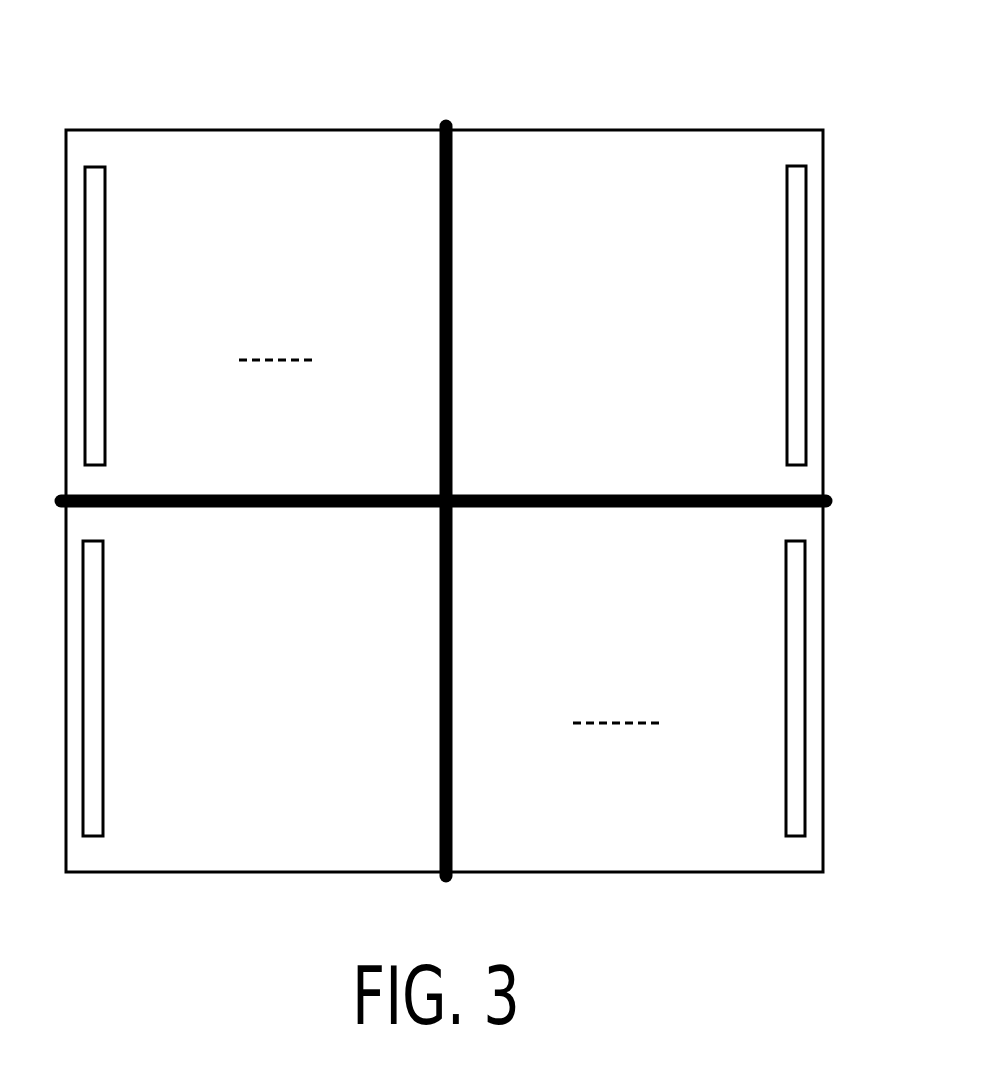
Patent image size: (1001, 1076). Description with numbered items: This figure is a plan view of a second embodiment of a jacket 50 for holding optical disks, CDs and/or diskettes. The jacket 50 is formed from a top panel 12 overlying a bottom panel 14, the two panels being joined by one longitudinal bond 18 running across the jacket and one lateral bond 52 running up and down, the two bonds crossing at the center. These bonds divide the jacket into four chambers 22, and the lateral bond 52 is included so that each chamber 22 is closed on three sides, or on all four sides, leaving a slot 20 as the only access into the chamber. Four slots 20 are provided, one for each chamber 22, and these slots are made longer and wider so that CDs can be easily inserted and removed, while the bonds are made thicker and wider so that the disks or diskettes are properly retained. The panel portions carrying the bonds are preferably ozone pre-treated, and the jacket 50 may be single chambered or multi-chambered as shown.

The top panel 12 is at (214, 177).
The bottom panel 14 is at (284, 177).
The longitudinal bond 18 is at (590, 507).
The slot 20 is at (93, 272).
The chamber 22 is at (449, 524).
The jacket 50 is at (740, 108).
The lateral bond 52 is at (453, 320).